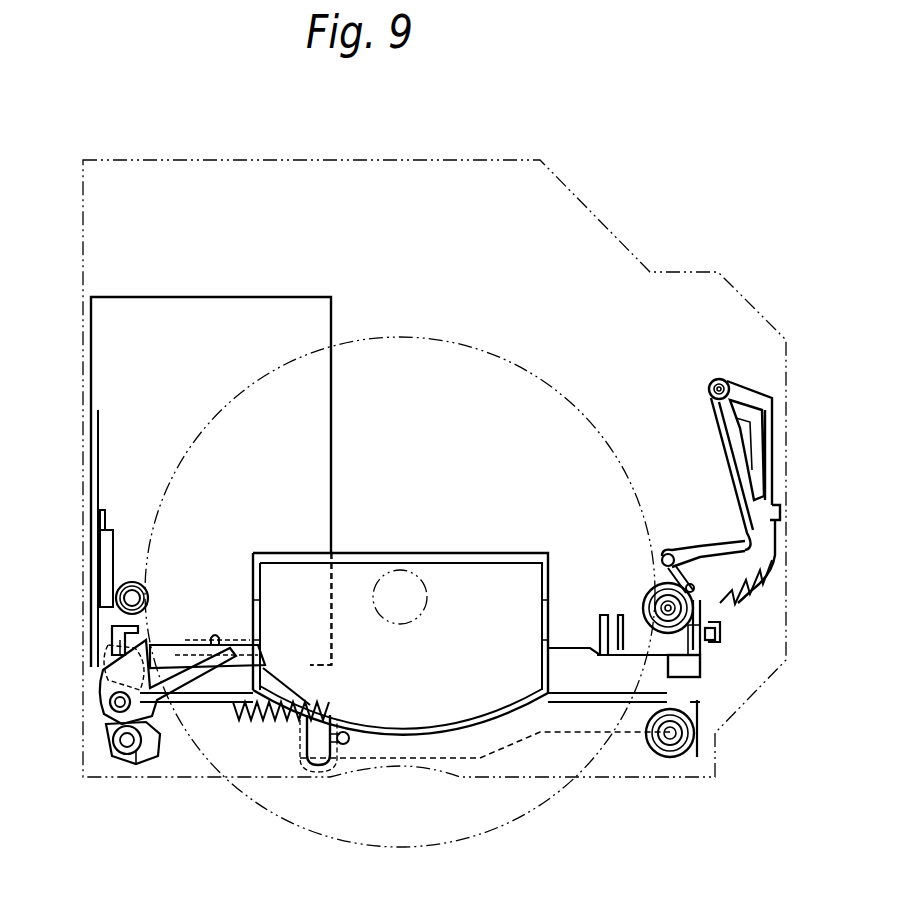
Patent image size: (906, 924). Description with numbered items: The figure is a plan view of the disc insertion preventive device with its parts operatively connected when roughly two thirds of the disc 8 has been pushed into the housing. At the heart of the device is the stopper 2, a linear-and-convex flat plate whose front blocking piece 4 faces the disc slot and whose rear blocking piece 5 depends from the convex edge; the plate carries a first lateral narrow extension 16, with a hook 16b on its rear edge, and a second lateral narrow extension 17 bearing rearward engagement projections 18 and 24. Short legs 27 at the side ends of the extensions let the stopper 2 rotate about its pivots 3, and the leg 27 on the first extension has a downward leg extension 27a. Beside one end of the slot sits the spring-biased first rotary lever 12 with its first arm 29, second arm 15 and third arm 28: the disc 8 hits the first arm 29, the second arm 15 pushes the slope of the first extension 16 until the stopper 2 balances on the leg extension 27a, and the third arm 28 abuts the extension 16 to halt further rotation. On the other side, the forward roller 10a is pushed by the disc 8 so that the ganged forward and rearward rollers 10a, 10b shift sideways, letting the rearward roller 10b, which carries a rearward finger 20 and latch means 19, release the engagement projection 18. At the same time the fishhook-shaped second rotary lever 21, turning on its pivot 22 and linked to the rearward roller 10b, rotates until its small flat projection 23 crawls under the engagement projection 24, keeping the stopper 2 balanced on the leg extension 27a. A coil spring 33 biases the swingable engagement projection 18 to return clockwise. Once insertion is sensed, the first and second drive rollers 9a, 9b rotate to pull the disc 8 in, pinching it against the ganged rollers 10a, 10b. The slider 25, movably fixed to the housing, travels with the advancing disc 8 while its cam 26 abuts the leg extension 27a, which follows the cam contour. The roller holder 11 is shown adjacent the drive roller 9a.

The stopper 2 is at (316, 550).
The pivot 3 is at (110, 663).
The front blocking piece 4 is at (392, 730).
The rear blocking piece 5 is at (424, 553).
The disc 8 is at (462, 832).
The first drive roller 9a is at (112, 746).
The second drive roller 9b is at (150, 588).
The forward roller 10a is at (668, 758).
The rearward roller 10b is at (666, 556).
The roller holder 11 is at (112, 724).
The first rotary lever 12 is at (106, 696).
The second arm 15 is at (218, 640).
The first lateral narrow extension 16 is at (232, 690).
The hook 16b is at (196, 648).
The second lateral narrow extension 17 is at (660, 680).
The engagement projection 18 is at (610, 615).
The latch means 19 is at (660, 600).
The rearward finger 20 is at (690, 549).
The second rotary lever 21 is at (766, 468).
The pivot 22 is at (715, 384).
The small flat projection 23 is at (738, 604).
The engagement projection 24 is at (712, 624).
The slider 25 is at (108, 336).
The cam 26 is at (130, 580).
The short leg 27 is at (712, 646).
The leg extension 27a is at (112, 522).
The third arm 28 is at (112, 634).
The first arm 29 is at (132, 762).
The coil spring 33 is at (768, 562).